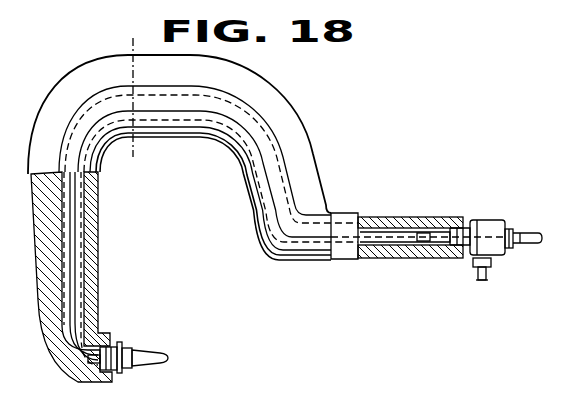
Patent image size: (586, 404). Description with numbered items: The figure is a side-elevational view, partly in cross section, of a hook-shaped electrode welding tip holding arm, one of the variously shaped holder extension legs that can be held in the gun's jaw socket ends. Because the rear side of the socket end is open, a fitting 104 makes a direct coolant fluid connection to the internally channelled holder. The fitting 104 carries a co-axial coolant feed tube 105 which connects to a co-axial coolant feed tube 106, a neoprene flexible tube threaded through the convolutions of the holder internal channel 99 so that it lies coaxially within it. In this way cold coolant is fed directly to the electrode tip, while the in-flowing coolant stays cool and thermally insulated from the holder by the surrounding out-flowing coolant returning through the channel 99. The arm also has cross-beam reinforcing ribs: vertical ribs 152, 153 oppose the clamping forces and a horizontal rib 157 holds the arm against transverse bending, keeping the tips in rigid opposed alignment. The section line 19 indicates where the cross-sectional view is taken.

The section line 19- 19 is at (160, 37).
The vertical reinforcing rib 152 is at (290, 108).
The vertical reinforcing rib 153 is at (202, 130).
The horizontal reinforcing rib 157 is at (242, 143).
The holder internal channel 99 is at (298, 206).
The fitting 104 is at (497, 230).
The co-axial coolant feed tube 105 is at (440, 240).
The co-axial coolant feed tube 106 is at (403, 236).